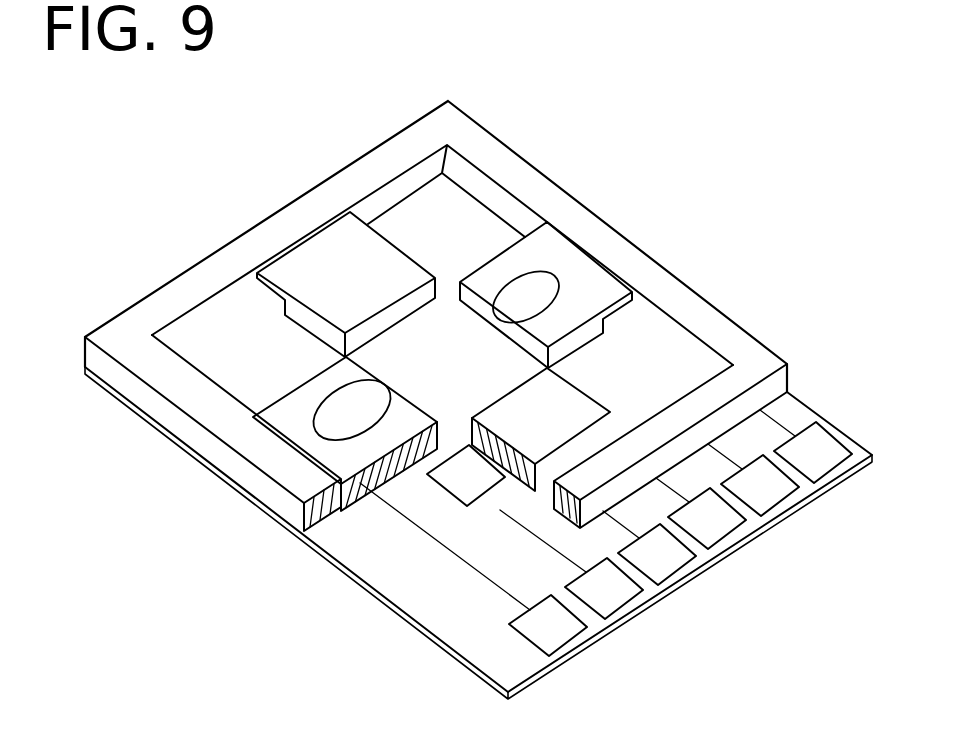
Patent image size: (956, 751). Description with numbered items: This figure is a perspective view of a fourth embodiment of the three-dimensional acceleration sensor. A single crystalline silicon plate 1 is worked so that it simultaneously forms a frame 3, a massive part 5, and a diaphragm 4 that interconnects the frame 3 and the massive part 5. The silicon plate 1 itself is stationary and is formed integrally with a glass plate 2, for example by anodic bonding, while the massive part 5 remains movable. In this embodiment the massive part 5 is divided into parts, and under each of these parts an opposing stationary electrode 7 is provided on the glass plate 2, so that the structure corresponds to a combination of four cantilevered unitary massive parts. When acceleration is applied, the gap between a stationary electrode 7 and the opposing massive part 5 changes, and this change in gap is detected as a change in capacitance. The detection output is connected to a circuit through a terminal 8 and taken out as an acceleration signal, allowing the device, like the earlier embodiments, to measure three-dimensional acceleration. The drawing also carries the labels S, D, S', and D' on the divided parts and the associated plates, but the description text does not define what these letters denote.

The single crystalline silicon plate 1 is at (858, 318).
The glass plate 2 is at (476, 674).
The frame 3 is at (303, 487).
The diaphragm 4 is at (352, 492).
The massive part 5 is at (399, 437).
The stationary electrode 7 is at (464, 493).
The terminal 8 is at (713, 527).
The source electrode S is at (266, 425).
The drain electrode D is at (304, 375).
The source electrode S' is at (561, 246).
The drain electrode D' is at (577, 340).